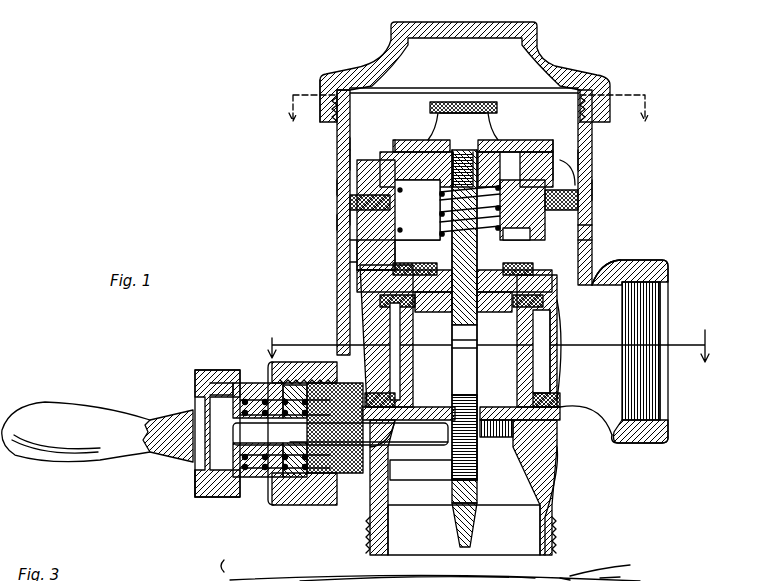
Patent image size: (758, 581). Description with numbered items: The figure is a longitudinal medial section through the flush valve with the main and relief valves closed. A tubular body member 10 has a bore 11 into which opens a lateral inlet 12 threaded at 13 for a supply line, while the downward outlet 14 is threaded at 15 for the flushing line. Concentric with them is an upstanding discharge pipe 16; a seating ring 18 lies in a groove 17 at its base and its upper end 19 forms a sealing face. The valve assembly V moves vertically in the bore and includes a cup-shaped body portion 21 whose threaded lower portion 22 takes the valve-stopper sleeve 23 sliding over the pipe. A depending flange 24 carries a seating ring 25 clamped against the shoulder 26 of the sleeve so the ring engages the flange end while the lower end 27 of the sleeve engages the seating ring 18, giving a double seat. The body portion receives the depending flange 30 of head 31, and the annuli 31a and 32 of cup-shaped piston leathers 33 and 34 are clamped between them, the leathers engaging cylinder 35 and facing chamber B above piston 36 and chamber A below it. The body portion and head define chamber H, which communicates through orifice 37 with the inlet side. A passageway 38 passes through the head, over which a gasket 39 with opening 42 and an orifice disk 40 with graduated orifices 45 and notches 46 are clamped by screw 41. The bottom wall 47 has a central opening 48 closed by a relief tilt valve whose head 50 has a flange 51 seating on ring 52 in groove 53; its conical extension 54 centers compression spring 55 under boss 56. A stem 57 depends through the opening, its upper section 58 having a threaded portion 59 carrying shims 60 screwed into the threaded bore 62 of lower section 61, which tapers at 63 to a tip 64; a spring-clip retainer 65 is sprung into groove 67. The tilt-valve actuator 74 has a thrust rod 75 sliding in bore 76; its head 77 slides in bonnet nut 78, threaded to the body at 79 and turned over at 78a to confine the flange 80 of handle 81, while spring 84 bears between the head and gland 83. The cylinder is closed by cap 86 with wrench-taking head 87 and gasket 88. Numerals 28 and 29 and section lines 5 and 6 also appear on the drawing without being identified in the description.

In FIG. 1, the tubular body member 10 is at (592, 170).
In FIG. 1, the bore 11 is at (625, 258).
In FIG. 1, the inlet 12 is at (646, 262).
In FIG. 1, the threaded attachment 13 is at (648, 302).
In FIG. 1, the outlet 14 is at (556, 515).
In FIG. 1, the threaded connection 15 is at (558, 538).
In FIG. 1, the annular flange or discharge pipe 16 is at (522, 370).
In FIG. 1, the groove 17 is at (396, 413).
In FIG. 1, the seating ring 18 is at (400, 400).
In FIG. 1, the upper end of flange 19 is at (400, 362).
In FIG. 1, the body portion 21 is at (362, 232).
In FIG. 1, the lower portion 22 is at (372, 282).
In FIG. 1, the valve-stopper sleeve 23 is at (557, 321).
In FIG. 1, the annular flange 24 is at (452, 308).
In FIG. 1, the seating ring 25 is at (548, 300).
In FIG. 1, the annular shoulder 26 is at (563, 362).
In FIG. 1, the lower end of sleeve 27 is at (568, 385).
In FIG. 1, the valve stem 28 is at (478, 432).
In FIG. 1, the gasket 29 is at (368, 312).
In FIG. 1, the depending flange 30 is at (578, 158).
In FIG. 1, the head 31 is at (566, 155).
In FIG. 1, the annulus of piston leather 31a is at (598, 195).
In FIG. 1, the annulus of piston leather 32 is at (588, 232).
In FIG. 1, the piston leather 33 is at (342, 186).
In FIG. 1, the piston leather 34 is at (336, 225).
In FIG. 1, the cylinder 35 is at (340, 160).
In FIG. 1, the piston 36 is at (352, 216).
In FIG. 1, the orifice 37 is at (582, 243).
In FIG. 1, the passageway 38 is at (513, 160).
In FIG. 1, the gasket 39 is at (510, 128).
In FIG. 1, the orifice disk 40 is at (532, 150).
In FIG. 1, the clamping screw 41 is at (458, 102).
In FIG. 1, the opening 42 is at (540, 145).
In FIG. 1, the orifice 45 is at (533, 150).
In FIG. 1, the notch or recess 46 is at (398, 142).
In FIG. 1, the bottom wall 47 is at (560, 287).
In FIG. 1, the central opening 48 is at (494, 314).
In FIG. 1, the circular head 50 is at (398, 215).
In FIG. 1, the annular flange 51 is at (392, 250).
In FIG. 3, the annular flange 51 is at (567, 574).
In FIG. 1, the seat ring 52 is at (522, 210).
In FIG. 1, the groove 53 is at (398, 293).
In FIG. 1, the conical extension 54 is at (412, 140).
In FIG. 1, the compression spring 55 is at (432, 142).
In FIG. 1, the depending boss 56 is at (476, 136).
In FIG. 1, the stem or extension 57 is at (530, 391).
In FIG. 1, the upper section 58 is at (478, 350).
In FIG. 1, the threaded portion 59 is at (478, 445).
In FIG. 1, the shims 60 is at (440, 467).
In FIG. 1, the lower section 61 is at (478, 496).
In FIG. 1, the threaded bore 62 is at (455, 487).
In FIG. 1, the tapered lower end 63 is at (478, 520).
In FIG. 1, the tip 64 is at (458, 540).
In FIG. 1, the retainer 65 is at (548, 473).
In FIG. 3, the retainer 65 is at (212, 566).
In FIG. 1, the groove 67 is at (372, 470).
In FIG. 1, the tilt-valve actuator 74 is at (226, 512).
In FIG. 1, the plunger or thrust rod 75 is at (283, 500).
In FIG. 1, the bore 76 is at (318, 505).
In FIG. 1, the head 77 is at (222, 366).
In FIG. 1, the bonnet nut 78 is at (255, 368).
In FIG. 1, the turned-over end 78a is at (208, 390).
In FIG. 1, the threads 79 is at (300, 505).
In FIG. 1, the flange 80 is at (206, 500).
In FIG. 1, the actuating handle 81 is at (42, 410).
In FIG. 1, the follower or gland 83 is at (300, 500).
In FIG. 1, the compression spring 84 is at (248, 370).
In FIG. 1, the cap 86 is at (322, 76).
In FIG. 3, the cap 86 is at (618, 572).
In FIG. 1, the wrench-taking head 87 is at (393, 30).
In FIG. 3, the wrench-taking head 87 is at (624, 560).
In FIG. 1, the gasket 88 is at (598, 74).
In FIG. 1, the cylinder chamber A is at (362, 258).
In FIG. 1, the cylinder chamber B is at (341, 145).
In FIG. 1, the piston-hollow or chamber H is at (356, 197).
In FIG. 1, the valve assembly V is at (600, 207).
In FIG. 1, the section line 5- 5 is at (488, 336).
In FIG. 1, the section line 6- 6 is at (469, 116).